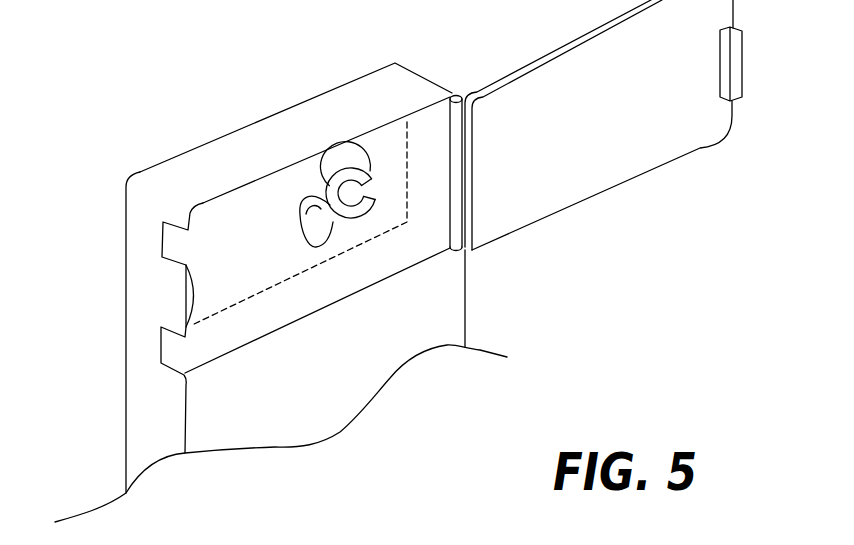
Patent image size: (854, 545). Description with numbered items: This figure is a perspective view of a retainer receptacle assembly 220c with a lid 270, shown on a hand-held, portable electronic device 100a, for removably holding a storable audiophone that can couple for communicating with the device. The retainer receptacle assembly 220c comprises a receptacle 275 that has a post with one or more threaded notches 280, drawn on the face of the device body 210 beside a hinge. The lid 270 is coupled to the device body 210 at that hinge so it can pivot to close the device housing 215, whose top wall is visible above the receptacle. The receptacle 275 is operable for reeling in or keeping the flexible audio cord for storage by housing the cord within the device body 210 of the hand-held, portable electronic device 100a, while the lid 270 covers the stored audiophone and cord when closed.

The hand-held, portable electronic device 100a is at (416, 261).
The device body 210 is at (297, 263).
The device housing 215 is at (402, 71).
The retainer receptacle assembly 220c is at (487, 238).
The lid 270 is at (617, 189).
The receptacle 275 is at (265, 208).
The threaded notches 280 is at (322, 191).